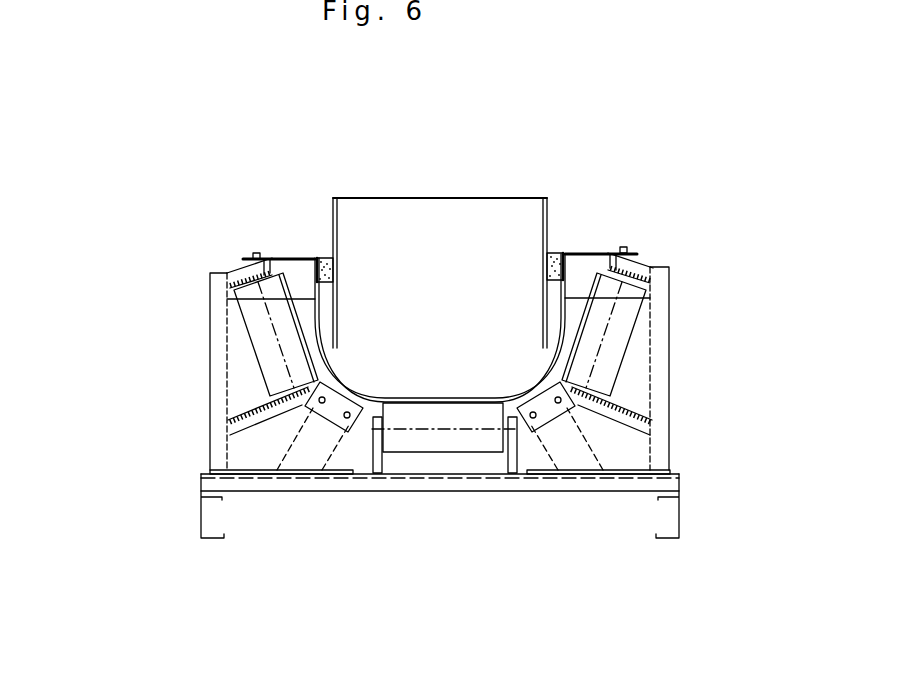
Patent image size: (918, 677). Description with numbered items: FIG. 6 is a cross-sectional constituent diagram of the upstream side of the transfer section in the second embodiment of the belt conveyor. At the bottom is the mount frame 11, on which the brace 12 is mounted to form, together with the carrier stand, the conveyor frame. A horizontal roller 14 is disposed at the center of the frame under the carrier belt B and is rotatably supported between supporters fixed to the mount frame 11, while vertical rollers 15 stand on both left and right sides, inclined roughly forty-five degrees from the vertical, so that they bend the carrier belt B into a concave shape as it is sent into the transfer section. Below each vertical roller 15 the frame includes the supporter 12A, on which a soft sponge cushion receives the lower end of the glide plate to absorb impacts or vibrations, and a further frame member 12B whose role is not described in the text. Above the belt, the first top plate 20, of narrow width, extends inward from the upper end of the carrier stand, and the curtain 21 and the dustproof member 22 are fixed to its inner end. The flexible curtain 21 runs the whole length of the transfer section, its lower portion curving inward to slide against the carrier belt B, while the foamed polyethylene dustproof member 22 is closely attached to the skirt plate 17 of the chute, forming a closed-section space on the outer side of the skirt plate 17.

The mount frame 11 is at (200, 513).
The brace 12 is at (218, 325).
The supporter 12A is at (303, 458).
The support post 12B is at (375, 467).
The horizontal rollers 14 is at (477, 442).
The vertical rollers 15 is at (267, 353).
The skirt plate 17 is at (337, 223).
The first top plate 20 is at (287, 255).
The curtain 21 is at (208, 298).
The dustproof member 22 is at (325, 256).
The carrier belt B is at (441, 402).